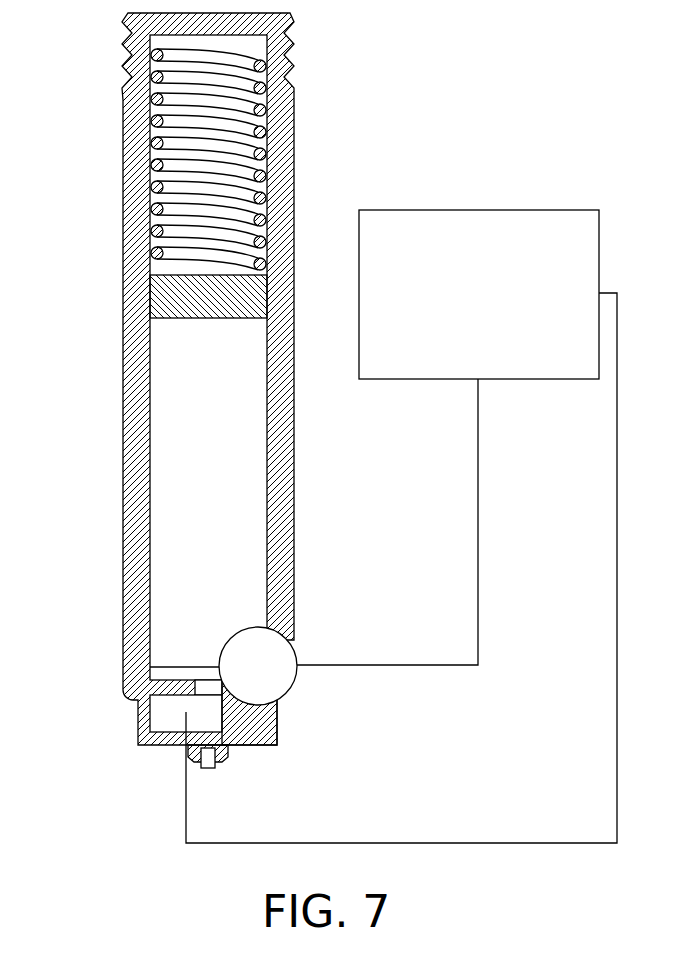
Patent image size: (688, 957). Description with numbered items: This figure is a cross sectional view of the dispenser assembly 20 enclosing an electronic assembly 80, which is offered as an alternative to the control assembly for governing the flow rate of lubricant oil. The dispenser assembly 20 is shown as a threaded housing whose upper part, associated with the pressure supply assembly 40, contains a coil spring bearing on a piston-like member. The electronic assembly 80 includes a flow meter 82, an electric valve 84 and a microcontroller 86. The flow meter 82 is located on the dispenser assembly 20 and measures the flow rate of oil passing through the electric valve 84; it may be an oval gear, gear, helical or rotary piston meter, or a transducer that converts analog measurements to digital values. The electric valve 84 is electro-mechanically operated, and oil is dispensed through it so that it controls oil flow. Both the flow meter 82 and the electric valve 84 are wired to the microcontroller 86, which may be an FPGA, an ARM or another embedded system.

The dispenser assembly 20 is at (118, 150).
The pressure supply assembly 40 is at (155, 299).
The electronic assembly 80 is at (310, 684).
The flow meter 82 is at (277, 655).
The electric valve 84 is at (157, 720).
The microcontroller 86 is at (543, 238).